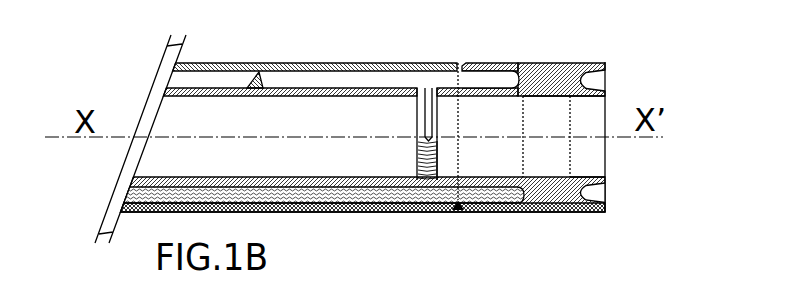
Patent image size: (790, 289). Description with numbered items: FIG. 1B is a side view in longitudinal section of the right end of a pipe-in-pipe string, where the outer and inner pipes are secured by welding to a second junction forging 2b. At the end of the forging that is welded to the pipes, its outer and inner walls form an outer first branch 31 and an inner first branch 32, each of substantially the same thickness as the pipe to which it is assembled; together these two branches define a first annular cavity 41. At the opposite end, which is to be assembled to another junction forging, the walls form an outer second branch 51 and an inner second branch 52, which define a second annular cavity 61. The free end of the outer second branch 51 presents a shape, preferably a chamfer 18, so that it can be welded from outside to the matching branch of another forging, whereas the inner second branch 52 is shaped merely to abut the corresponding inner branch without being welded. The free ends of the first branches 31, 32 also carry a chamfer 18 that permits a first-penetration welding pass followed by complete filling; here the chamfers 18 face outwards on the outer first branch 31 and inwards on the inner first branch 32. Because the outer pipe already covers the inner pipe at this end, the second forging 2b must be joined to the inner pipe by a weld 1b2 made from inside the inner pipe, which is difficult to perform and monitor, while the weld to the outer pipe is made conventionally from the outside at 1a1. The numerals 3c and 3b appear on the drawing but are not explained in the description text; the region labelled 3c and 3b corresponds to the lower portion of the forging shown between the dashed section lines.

The chamfer 18 is at (456, 63).
The outer first branch 31 is at (490, 63).
The first annular cavity 41 is at (510, 78).
The second junction forging 2b is at (555, 63).
The outer second branch 51 is at (603, 63).
The second annular cavity 61 is at (592, 80).
The inner first branch 32 is at (481, 96).
The intermediate tube portion 3c is at (549, 96).
The inner second branch 52 is at (594, 96).
The weld 1b2 is at (437, 160).
The weld location 1a1 is at (457, 210).
The outer tube portion 3b is at (530, 212).